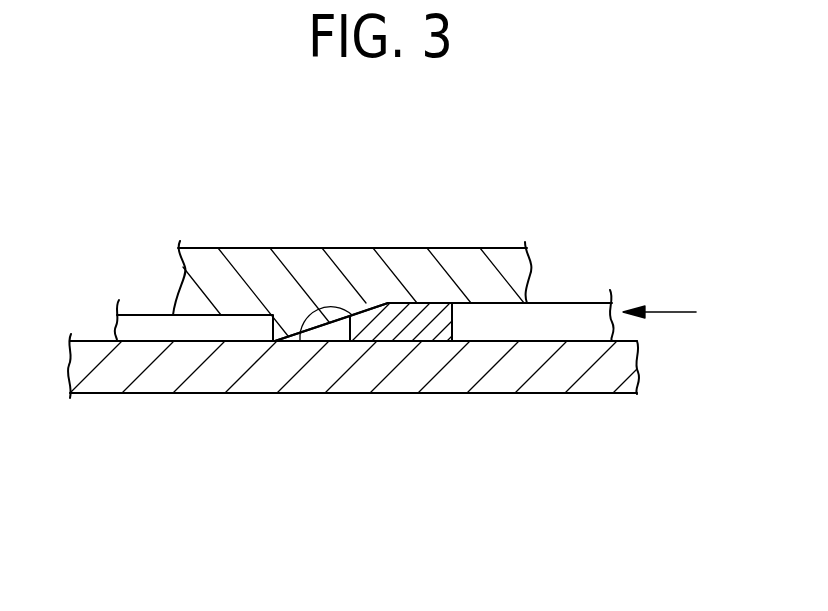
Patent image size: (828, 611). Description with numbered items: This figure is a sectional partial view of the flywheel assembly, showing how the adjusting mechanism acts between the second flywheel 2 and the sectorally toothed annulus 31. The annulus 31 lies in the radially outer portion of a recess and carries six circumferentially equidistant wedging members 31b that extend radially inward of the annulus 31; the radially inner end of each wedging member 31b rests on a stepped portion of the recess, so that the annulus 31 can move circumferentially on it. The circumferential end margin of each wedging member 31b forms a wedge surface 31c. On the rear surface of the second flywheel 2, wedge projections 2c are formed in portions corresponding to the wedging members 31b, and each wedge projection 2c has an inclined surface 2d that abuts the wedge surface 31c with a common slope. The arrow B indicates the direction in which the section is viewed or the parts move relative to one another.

The second flywheel 2 is at (358, 267).
The wedge projection 2c is at (287, 328).
The inclined surface 2d is at (328, 341).
The sectorally toothed annulus 31 is at (578, 320).
The wedging member 31b is at (437, 336).
The wedge surface 31c is at (298, 341).
The direction of force / view B is at (659, 295).